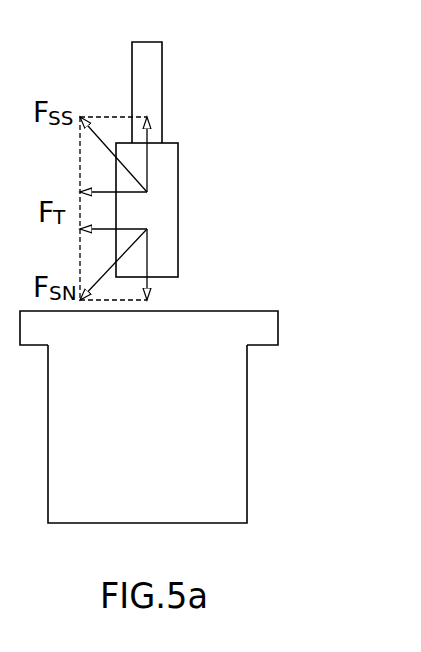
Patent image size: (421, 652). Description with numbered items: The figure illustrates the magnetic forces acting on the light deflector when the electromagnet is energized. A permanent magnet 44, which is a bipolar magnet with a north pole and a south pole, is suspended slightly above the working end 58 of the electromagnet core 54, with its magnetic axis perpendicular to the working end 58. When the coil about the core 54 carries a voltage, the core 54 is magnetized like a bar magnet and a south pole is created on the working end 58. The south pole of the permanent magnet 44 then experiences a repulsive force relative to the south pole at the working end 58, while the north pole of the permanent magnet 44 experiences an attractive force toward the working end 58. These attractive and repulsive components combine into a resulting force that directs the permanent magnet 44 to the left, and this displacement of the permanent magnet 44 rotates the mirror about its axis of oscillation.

The permanent magnet 44 is at (168, 162).
The working end 58 is at (278, 325).
The core 54 is at (246, 450).